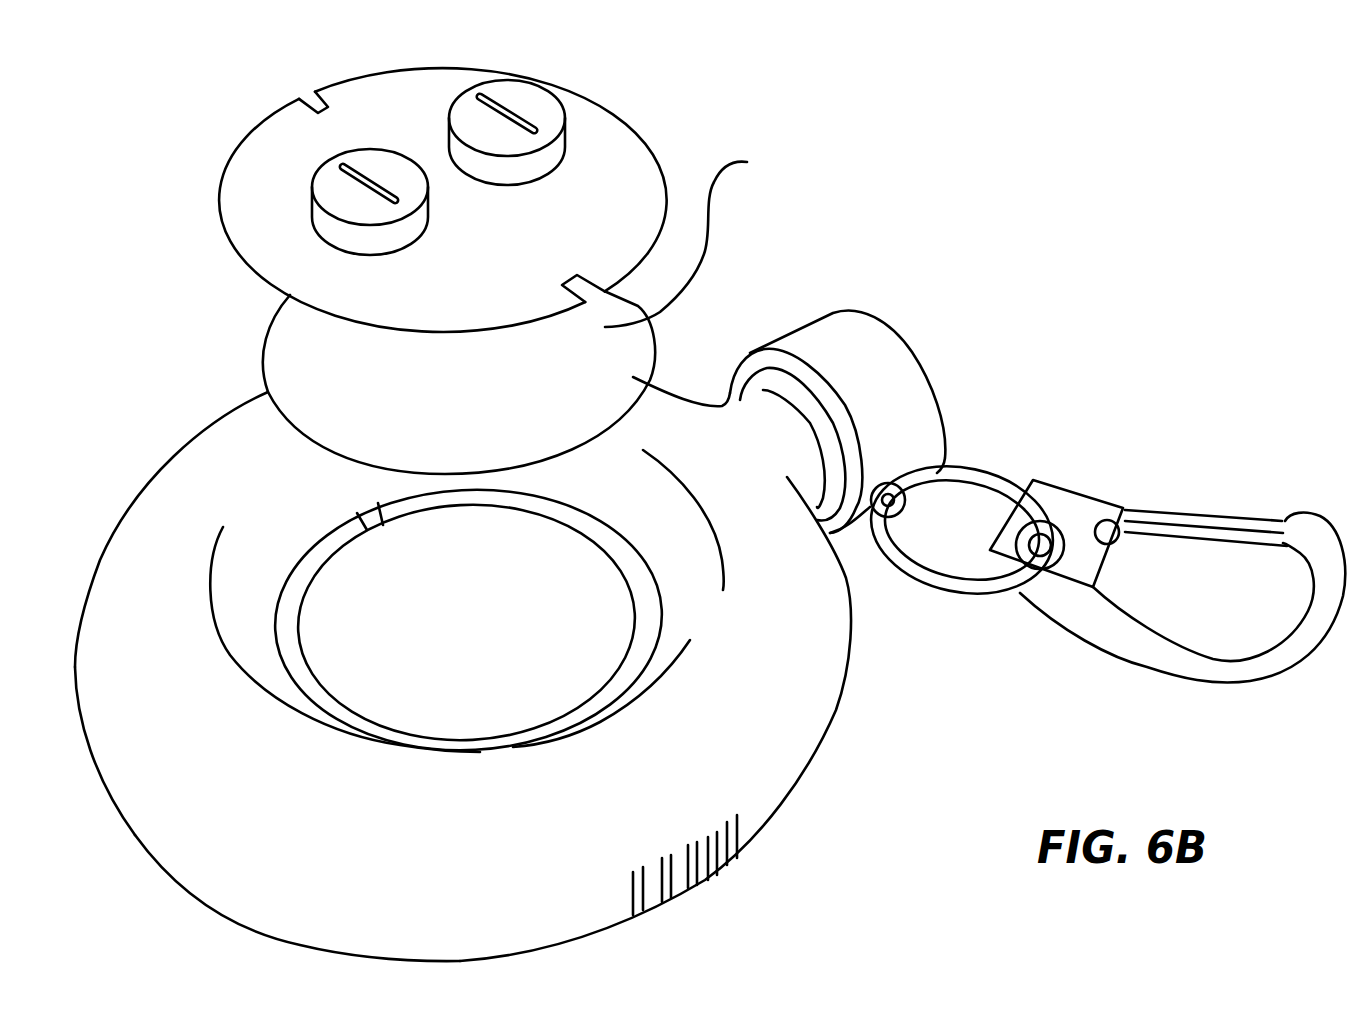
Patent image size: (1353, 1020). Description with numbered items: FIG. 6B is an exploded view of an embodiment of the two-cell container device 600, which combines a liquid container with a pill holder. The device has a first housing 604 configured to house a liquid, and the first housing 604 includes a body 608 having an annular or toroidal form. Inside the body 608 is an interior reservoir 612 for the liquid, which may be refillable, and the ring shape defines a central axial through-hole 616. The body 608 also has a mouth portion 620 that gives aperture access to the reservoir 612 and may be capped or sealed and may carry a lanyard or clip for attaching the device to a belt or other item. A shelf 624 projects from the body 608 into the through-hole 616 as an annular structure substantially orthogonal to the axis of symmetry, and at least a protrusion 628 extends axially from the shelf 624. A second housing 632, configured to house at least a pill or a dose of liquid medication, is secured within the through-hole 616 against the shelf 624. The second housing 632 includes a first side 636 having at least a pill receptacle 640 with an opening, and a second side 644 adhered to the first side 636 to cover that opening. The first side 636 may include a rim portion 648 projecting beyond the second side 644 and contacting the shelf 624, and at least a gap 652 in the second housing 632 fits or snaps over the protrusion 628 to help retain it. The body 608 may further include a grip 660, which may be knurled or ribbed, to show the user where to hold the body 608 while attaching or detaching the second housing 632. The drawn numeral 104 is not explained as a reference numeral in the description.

The two-cell container device 600 is at (975, 165).
The first housing 604 is at (783, 700).
The body 608 is at (205, 837).
The interior reservoir 612 is at (330, 883).
The through-hole 616 is at (357, 610).
The mouth portion 620 is at (882, 368).
The shelf 624 is at (643, 590).
The protrusion 628 is at (370, 517).
The second housing 632 is at (642, 177).
The first side 636 is at (610, 128).
The pill receptacle 640 is at (343, 200).
The second side 644 is at (297, 347).
The rim portion 648 is at (238, 268).
The gap 652 is at (440, 183).
The grip 660 is at (667, 878).
The dispensing button 104 is at (438, 167).